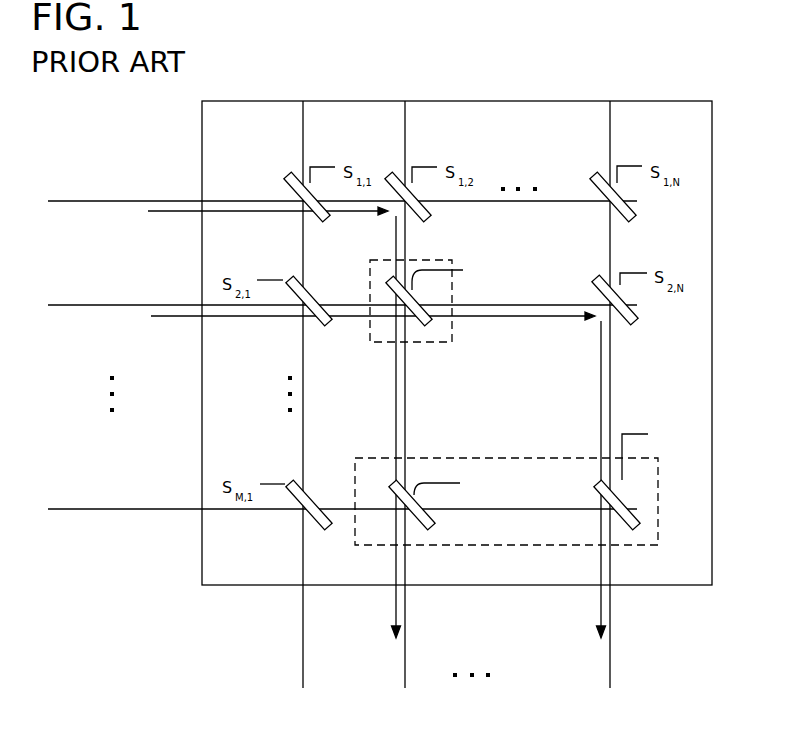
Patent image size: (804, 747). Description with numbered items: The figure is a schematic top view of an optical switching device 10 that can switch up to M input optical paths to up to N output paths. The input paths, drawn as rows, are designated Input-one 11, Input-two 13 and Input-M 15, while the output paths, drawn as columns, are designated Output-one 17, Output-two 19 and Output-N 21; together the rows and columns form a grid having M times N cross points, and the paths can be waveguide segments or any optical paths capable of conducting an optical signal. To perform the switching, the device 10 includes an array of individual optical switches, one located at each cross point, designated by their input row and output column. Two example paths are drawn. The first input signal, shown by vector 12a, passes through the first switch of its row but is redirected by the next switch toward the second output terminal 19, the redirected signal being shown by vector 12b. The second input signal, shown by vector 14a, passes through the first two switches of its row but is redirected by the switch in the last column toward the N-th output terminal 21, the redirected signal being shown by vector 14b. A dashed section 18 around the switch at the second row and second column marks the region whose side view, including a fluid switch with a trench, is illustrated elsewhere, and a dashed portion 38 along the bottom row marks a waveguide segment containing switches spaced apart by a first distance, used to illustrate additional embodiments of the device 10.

The optical switching device 10 is at (609, 101).
The Input-1 optical path 11 is at (124, 201).
The Input-2 optical path 13 is at (125, 305).
The Input-M optical path 15 is at (125, 509).
The input signal vector (Input-1) 12a is at (277, 211).
The redirected signal vector 12b is at (396, 408).
The input signal vector (Input-2) 14a is at (277, 316).
The redirected signal vector 14b is at (601, 408).
The Output-1 optical path 17 is at (303, 611).
The Output-2 optical path 19 is at (405, 611).
The Output-N optical path 21 is at (610, 611).
The section of the device 18 is at (445, 342).
The portion of the device 38 is at (638, 545).